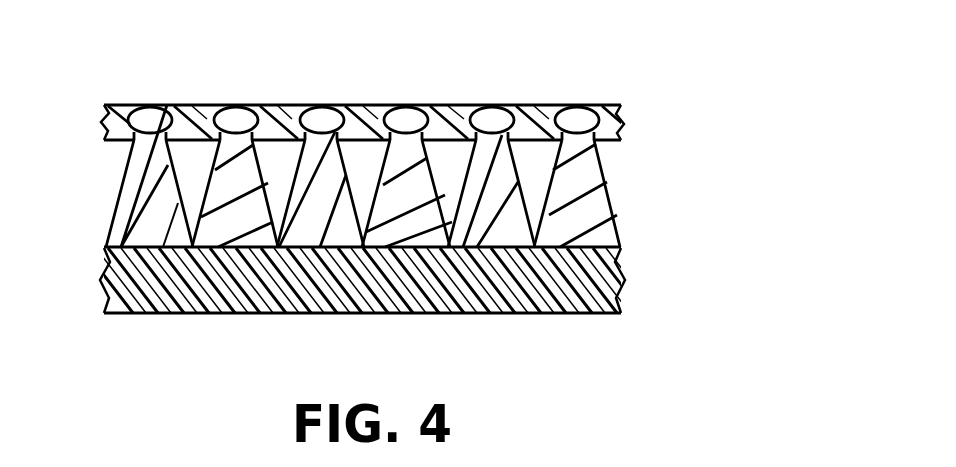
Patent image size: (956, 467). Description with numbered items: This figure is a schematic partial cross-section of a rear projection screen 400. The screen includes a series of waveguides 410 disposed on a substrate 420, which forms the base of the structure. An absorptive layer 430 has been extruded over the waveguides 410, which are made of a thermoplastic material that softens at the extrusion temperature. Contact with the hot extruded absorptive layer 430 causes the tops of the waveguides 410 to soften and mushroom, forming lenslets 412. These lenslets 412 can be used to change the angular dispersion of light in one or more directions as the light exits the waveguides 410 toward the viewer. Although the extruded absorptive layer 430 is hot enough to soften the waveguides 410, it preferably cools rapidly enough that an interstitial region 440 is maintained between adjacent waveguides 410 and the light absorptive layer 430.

The rear projection screen 400 is at (688, 111).
The waveguides 410 is at (590, 207).
The lenslets 412 is at (147, 115).
The substrate 420 is at (590, 297).
The absorptive layer 430 is at (457, 108).
The interstitial region 440 is at (369, 166).